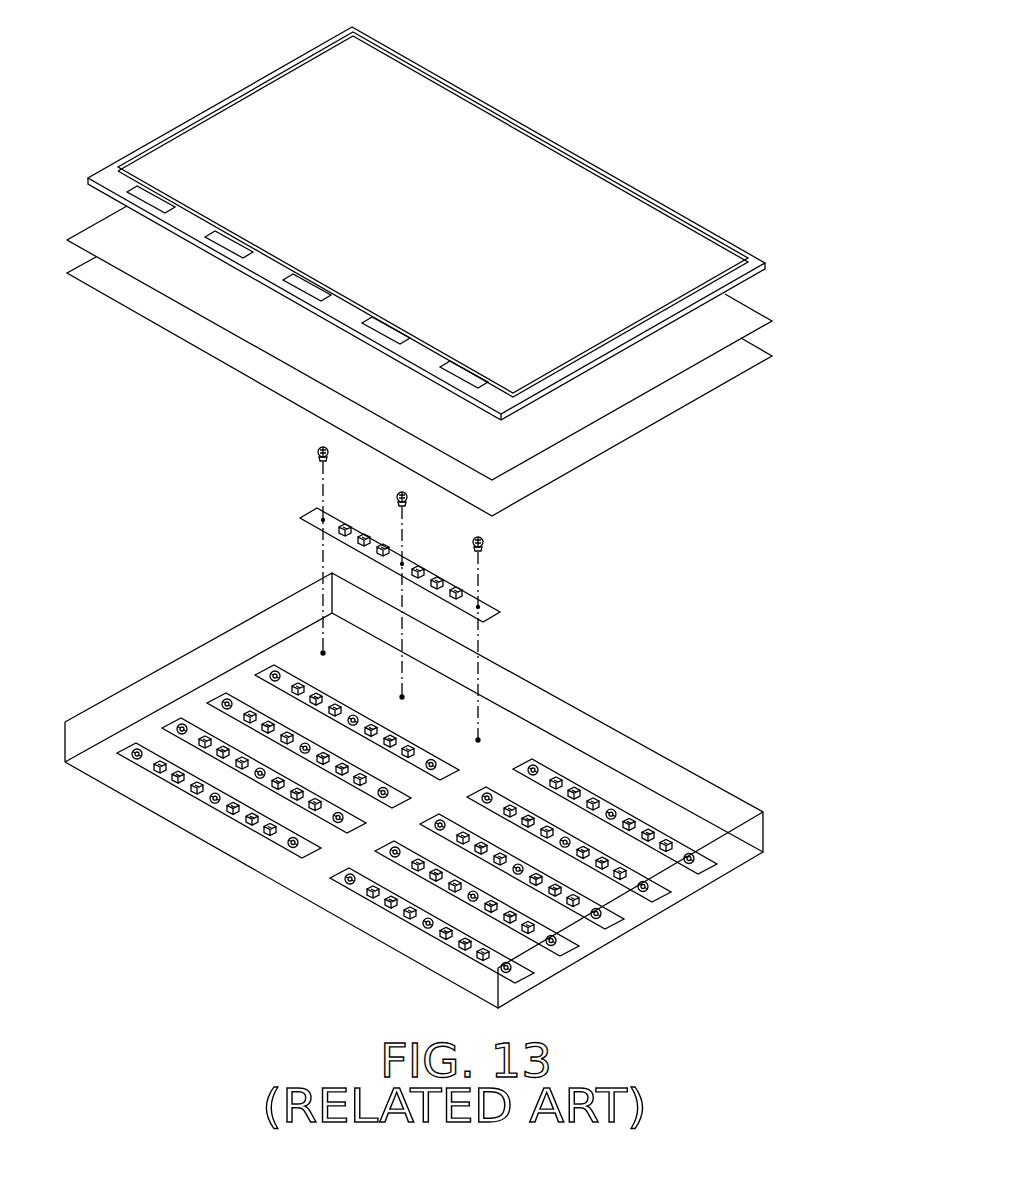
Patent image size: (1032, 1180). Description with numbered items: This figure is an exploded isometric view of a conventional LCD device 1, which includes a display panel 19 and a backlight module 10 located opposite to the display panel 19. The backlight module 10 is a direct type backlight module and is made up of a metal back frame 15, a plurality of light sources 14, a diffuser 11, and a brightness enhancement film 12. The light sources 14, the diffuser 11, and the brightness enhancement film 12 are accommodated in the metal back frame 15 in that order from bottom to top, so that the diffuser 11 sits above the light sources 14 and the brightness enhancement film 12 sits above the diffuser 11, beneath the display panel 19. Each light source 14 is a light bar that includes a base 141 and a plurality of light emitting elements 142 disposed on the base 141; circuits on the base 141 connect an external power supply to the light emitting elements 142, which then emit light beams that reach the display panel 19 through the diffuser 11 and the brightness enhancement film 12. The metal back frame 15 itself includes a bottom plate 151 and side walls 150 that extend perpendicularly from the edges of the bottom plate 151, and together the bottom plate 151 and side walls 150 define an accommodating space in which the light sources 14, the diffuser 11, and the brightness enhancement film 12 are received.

The LCD device 1 is at (556, 50).
The backlight module 10 is at (778, 314).
The diffuser 11 is at (592, 445).
The brightness enhancement film 12 is at (622, 380).
The light source 14 is at (492, 573).
The base 141 is at (490, 612).
The light emitting element 142 is at (430, 588).
The metal back frame 15 is at (556, 710).
The side wall 150 is at (670, 893).
The bottom plate 151 is at (583, 768).
The display panel 19 is at (595, 200).